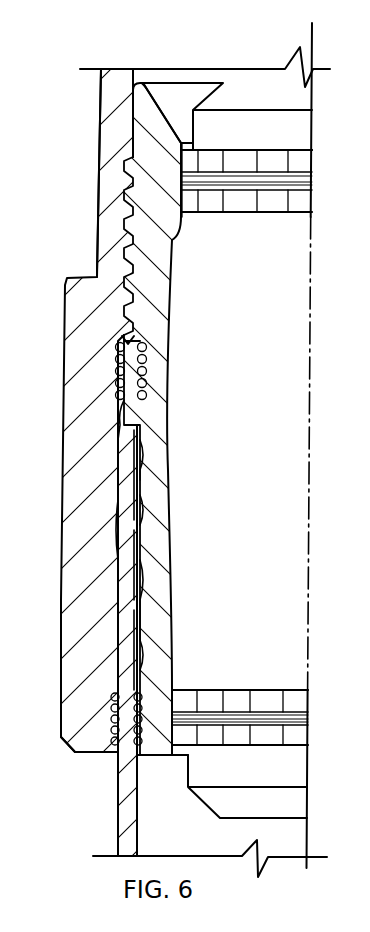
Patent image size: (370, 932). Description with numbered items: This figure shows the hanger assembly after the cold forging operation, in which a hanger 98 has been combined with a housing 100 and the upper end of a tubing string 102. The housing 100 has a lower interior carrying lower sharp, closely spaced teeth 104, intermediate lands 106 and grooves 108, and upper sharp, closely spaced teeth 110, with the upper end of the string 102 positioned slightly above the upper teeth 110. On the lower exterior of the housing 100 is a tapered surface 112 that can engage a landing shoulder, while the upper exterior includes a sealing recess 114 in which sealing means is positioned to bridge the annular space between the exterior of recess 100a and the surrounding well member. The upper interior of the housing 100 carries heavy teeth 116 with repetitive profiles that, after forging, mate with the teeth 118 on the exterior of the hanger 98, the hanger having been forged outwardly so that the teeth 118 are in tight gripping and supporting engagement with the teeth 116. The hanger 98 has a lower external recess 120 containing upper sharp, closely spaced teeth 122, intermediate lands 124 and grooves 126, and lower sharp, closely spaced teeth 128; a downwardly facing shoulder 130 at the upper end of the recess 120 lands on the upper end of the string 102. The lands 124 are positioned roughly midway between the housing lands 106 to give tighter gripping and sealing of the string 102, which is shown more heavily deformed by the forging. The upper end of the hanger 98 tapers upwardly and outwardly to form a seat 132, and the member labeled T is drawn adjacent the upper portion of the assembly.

The hanger 98 is at (173, 583).
The housing 100 is at (64, 455).
The recess exterior 100a is at (98, 188).
The string 102 is at (118, 828).
The lower sharp, closely spaced teeth 104 is at (167, 693).
The intermediate lands 106 is at (122, 635).
The grooves 108 is at (150, 483).
The upper sharp, closely spaced teeth 110 is at (120, 377).
The tapered surface 112 is at (74, 747).
The sealing recess 114 is at (98, 150).
The heavy teeth 116 is at (127, 207).
The teeth 118 is at (130, 258).
The lower external recess 120 is at (115, 468).
The upper sharp, closely spaced teeth 122 is at (130, 384).
The intermediate lands 124 is at (128, 420).
The grooves 126 is at (137, 518).
The lower sharp, closely spaced teeth 128 is at (117, 700).
The shoulder 130 is at (142, 353).
The seat 132 is at (162, 100).
The tubing T is at (208, 83).